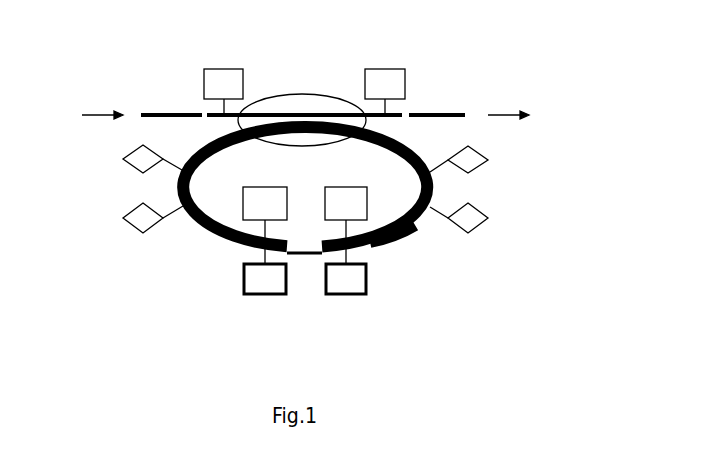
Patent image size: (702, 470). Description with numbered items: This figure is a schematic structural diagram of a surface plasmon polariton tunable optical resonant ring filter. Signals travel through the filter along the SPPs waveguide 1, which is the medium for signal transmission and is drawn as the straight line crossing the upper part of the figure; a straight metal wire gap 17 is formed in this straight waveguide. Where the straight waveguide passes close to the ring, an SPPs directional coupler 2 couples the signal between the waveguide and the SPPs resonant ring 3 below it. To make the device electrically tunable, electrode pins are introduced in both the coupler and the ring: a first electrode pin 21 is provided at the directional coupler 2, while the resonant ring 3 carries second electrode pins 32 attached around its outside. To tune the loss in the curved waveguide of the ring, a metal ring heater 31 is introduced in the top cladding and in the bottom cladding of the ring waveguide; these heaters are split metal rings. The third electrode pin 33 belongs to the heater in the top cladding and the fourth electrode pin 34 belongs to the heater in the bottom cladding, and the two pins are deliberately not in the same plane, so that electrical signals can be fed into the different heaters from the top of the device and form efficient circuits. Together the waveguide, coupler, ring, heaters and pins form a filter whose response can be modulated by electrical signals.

The SPPs waveguide 1 is at (150, 112).
The straight metal wire gap 17 is at (202, 112).
The coupler 2 is at (298, 108).
The first electrode pin 21 is at (220, 73).
The resonant ring 3 is at (302, 250).
The ring heater 31 is at (385, 242).
The second electrode pin 32 is at (476, 151).
The third electrode pin 33 is at (250, 297).
The fourth electrode pin 34 is at (243, 221).